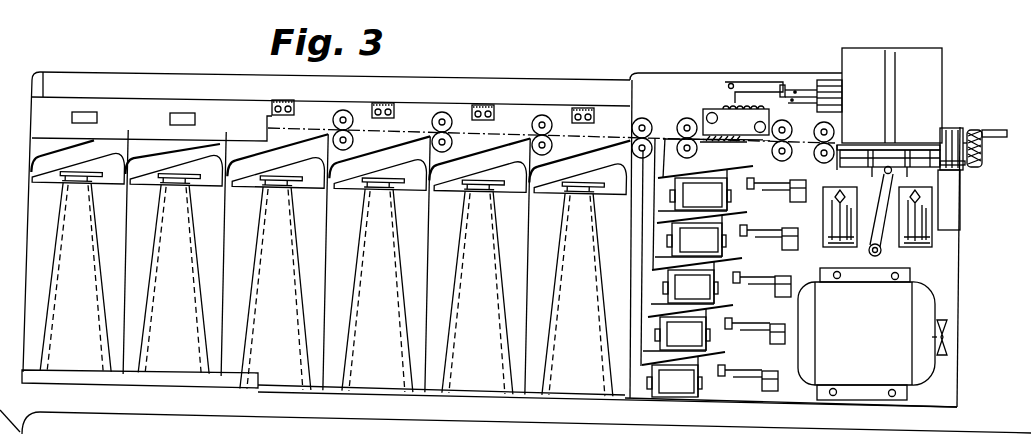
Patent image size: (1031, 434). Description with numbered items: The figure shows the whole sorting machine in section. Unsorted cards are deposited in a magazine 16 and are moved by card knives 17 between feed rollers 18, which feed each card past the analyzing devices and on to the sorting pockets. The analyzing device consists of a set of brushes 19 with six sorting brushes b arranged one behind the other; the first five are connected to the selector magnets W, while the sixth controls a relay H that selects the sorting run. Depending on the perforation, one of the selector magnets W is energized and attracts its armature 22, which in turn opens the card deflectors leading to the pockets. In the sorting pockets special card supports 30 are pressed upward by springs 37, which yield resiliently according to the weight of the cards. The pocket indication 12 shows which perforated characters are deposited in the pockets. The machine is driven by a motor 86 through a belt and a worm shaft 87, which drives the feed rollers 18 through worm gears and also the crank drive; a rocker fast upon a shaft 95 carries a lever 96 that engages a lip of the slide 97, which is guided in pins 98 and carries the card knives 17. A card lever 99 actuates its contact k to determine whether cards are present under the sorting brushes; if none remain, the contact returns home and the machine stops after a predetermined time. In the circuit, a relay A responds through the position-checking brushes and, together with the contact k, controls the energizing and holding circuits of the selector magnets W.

The pocket indication 12 is at (186, 114).
The feed rollers 18 is at (441, 121).
The card supports 30 is at (95, 186).
The springs 37 is at (21, 312).
The armature 22 is at (718, 169).
The set of brushes 19 is at (722, 106).
The sorting brushes b is at (745, 106).
The card lever 99 is at (773, 80).
The card lever contact k is at (843, 79).
The magazine 16 is at (912, 76).
The pins 98 is at (917, 163).
The slide 97 is at (928, 145).
The worm shaft 87 is at (970, 129).
The card knives 17 is at (948, 164).
The relay A is at (929, 201).
The lever 96 is at (931, 233).
The shaft 95 is at (882, 253).
The motor 86 is at (902, 309).
The relay H is at (828, 223).
The selector magnets W is at (697, 198).